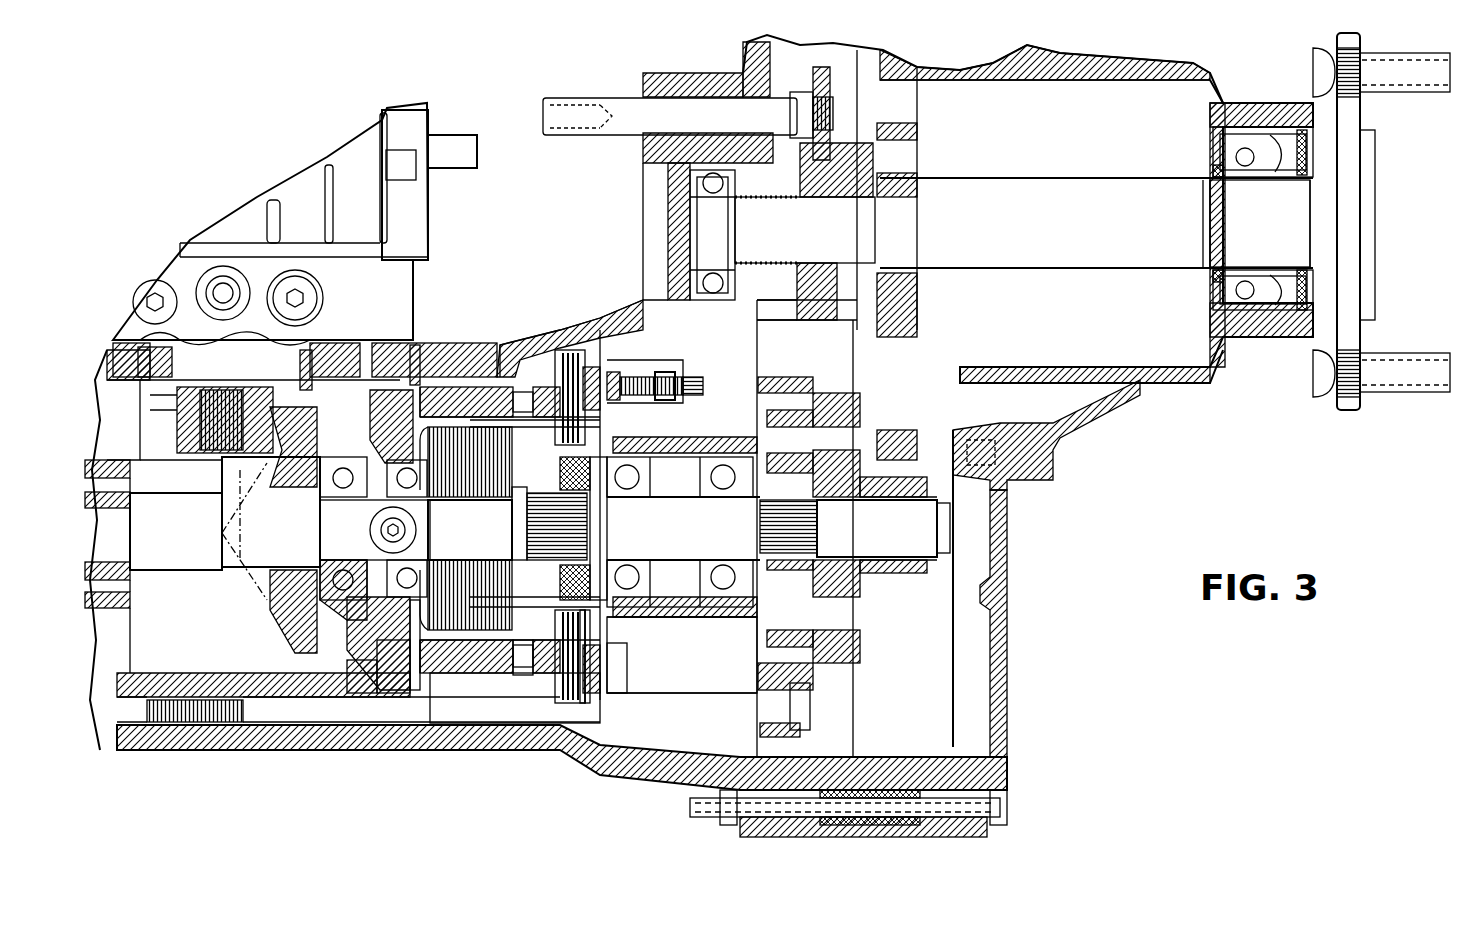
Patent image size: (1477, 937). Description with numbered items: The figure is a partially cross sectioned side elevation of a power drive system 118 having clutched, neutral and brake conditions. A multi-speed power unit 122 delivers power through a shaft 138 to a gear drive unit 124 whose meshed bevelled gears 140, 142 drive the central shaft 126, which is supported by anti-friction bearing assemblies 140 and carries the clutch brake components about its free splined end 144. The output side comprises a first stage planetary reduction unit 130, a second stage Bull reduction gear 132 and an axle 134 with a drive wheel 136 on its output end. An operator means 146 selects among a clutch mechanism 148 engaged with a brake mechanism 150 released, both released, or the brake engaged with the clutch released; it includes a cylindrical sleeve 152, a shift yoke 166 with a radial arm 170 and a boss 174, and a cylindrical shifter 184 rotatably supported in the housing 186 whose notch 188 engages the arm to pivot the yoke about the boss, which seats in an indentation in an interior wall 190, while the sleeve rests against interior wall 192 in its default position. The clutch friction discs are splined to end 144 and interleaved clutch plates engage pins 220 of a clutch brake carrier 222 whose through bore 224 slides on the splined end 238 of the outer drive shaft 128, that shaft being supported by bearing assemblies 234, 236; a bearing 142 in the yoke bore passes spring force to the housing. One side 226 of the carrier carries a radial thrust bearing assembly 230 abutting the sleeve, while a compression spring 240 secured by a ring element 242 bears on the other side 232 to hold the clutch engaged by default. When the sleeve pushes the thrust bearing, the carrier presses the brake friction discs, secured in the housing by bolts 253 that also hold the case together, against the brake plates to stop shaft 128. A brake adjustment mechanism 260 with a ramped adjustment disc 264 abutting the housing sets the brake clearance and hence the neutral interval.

The power drive system 118 is at (740, 35).
The multi-speed power unit 122 is at (412, 118).
The gear drive unit 124 is at (207, 470).
The central shaft 126 is at (213, 512).
The outer drive shaft 128 is at (690, 540).
The first stage planetary reduction unit 130 is at (863, 410).
The second stage Bull reduction gear 132 is at (925, 128).
The axle 134 is at (1022, 205).
The drive wheel 136 is at (1345, 42).
The shaft 138 is at (225, 368).
The bevelled gear / anti-friction bearing assemblies 140 is at (180, 420).
The bevelled gear / bearing 142 is at (295, 612).
The free splined end 144 is at (455, 560).
The operator means 146 is at (425, 680).
The clutch mechanism 148 is at (553, 440).
The brake mechanism 150 is at (540, 660).
The cylindrical sleeve 152 is at (478, 385).
The shift yoke 166 is at (320, 355).
The arm 170 is at (395, 680).
The boss 174 is at (395, 430).
The cylindrical shifter 184 is at (380, 697).
The housing 186 is at (673, 283).
The notch / indentation 188 is at (385, 440).
The interior wall 190 is at (345, 625).
The interior wall 192 is at (405, 398).
The pins 220 is at (535, 440).
The clutch brake carrier 222 is at (565, 702).
The circular through bore 224 is at (553, 522).
The side 226 is at (500, 735).
The radial thrust bearing assembly 230 is at (517, 380).
The side 232 is at (522, 692).
The anti-friction bearing assembly 234 is at (640, 605).
The anti-friction bearing assembly 236 is at (740, 600).
The free splined end 238 is at (680, 382).
The compression spring 240 is at (600, 462).
The ring element 242 is at (600, 470).
The bolts 253 is at (668, 712).
The brake adjustment mechanism 260 is at (640, 320).
The adjustment disc 264 is at (622, 372).